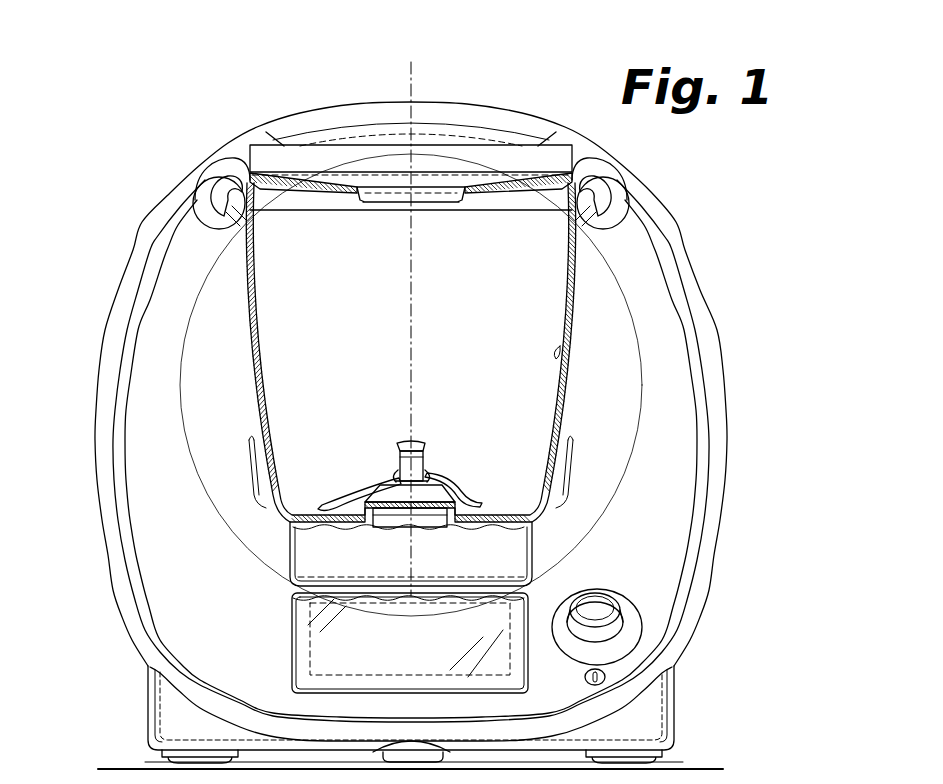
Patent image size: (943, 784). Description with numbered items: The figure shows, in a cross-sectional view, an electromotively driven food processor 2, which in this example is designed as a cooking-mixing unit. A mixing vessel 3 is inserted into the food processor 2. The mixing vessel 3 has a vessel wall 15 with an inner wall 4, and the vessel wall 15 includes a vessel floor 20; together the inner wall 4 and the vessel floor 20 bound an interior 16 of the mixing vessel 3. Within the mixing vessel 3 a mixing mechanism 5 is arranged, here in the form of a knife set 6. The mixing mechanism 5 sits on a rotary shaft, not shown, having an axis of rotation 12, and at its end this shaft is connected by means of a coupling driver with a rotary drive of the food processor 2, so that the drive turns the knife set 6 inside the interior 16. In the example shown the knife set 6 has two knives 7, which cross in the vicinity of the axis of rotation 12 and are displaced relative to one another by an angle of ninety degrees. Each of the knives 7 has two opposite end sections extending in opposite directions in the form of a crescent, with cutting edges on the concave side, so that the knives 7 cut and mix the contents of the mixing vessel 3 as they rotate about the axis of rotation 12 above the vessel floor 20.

The food processor 2 is at (760, 391).
The mixing vessel 3 is at (421, 384).
The inner wall 4 is at (563, 348).
The mixing mechanism 5 is at (423, 472).
The knife set 6 is at (452, 454).
The knives 7 is at (340, 495).
The axis of rotation 12 is at (415, 90).
The vessel wall 15 is at (578, 258).
The interior 16 is at (312, 318).
The vessel floor 20 is at (510, 507).